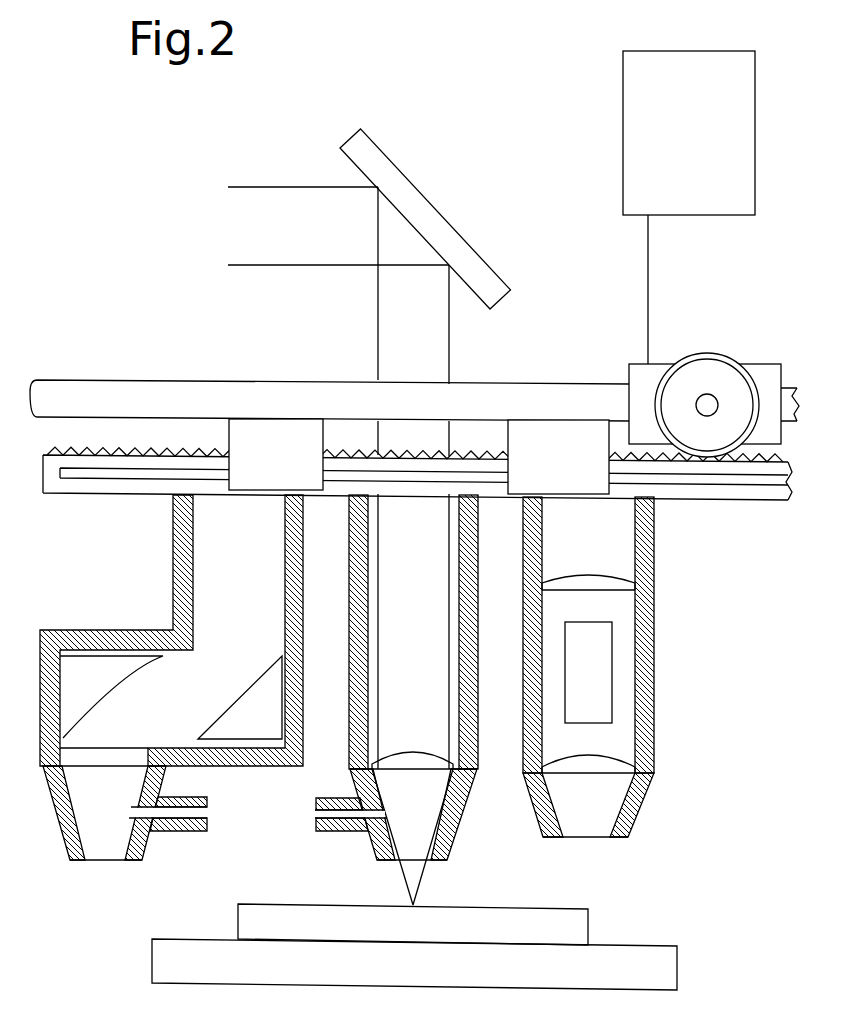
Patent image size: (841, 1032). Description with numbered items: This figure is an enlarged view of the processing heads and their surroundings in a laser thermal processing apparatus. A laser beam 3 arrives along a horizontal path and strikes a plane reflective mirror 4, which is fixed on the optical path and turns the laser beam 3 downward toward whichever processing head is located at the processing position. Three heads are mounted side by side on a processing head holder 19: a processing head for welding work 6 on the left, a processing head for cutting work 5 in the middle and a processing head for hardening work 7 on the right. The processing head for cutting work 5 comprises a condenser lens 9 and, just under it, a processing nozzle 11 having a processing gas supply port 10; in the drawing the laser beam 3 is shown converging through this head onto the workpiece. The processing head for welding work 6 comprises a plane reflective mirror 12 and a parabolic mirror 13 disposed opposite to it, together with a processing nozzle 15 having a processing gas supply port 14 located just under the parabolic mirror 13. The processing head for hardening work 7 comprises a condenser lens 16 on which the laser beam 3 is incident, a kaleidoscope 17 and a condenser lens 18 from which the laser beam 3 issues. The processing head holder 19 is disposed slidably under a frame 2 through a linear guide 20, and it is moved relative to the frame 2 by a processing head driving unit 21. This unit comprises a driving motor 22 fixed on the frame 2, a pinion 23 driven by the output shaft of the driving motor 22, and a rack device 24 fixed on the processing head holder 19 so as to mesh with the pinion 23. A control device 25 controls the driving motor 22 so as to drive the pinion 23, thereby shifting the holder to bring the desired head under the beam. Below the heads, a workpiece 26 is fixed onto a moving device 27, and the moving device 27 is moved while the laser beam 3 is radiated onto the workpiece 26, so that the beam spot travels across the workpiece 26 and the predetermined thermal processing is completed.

The frame 2 is at (135, 398).
The laser beam 3 is at (378, 340).
The plane reflective mirror 4 is at (433, 227).
The processing head for cutting work 5 is at (462, 598).
The processing head for welding work 6 is at (183, 600).
The processing head for hardening work 7 is at (650, 700).
The condenser lens 9 is at (380, 760).
The processing gas supply port 10 is at (350, 835).
The processing nozzle 11 is at (375, 862).
The plane reflective mirror 12 is at (235, 733).
The parabolic mirror 13 is at (87, 668).
The processing gas supply port 14 is at (168, 833).
The processing nozzle 15 is at (135, 862).
The condenser lens 16 is at (610, 583).
The kaleidoscope 17 is at (595, 686).
The condenser lens 18 is at (592, 768).
The processing head holder 19 is at (93, 493).
The linear guide 20 is at (253, 433).
The processing head driving unit 21 is at (660, 356).
The driving motor 22 is at (640, 372).
The pinion 23 is at (695, 365).
The rack device 24 is at (657, 493).
The control device 25 is at (646, 127).
The workpiece 26 is at (570, 930).
The moving device 27 is at (682, 952).